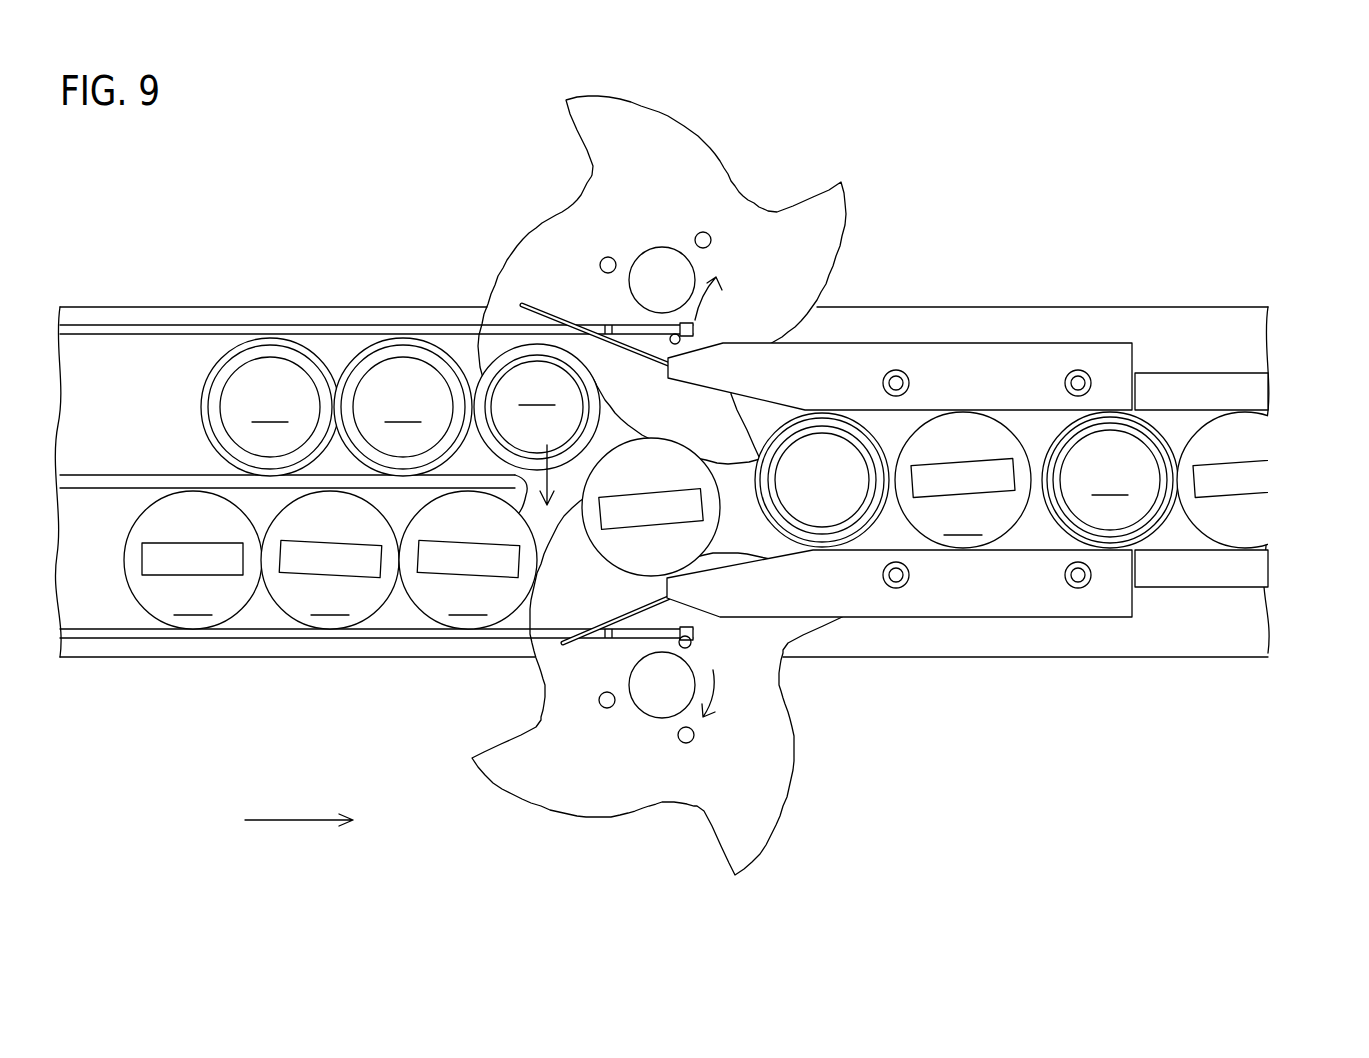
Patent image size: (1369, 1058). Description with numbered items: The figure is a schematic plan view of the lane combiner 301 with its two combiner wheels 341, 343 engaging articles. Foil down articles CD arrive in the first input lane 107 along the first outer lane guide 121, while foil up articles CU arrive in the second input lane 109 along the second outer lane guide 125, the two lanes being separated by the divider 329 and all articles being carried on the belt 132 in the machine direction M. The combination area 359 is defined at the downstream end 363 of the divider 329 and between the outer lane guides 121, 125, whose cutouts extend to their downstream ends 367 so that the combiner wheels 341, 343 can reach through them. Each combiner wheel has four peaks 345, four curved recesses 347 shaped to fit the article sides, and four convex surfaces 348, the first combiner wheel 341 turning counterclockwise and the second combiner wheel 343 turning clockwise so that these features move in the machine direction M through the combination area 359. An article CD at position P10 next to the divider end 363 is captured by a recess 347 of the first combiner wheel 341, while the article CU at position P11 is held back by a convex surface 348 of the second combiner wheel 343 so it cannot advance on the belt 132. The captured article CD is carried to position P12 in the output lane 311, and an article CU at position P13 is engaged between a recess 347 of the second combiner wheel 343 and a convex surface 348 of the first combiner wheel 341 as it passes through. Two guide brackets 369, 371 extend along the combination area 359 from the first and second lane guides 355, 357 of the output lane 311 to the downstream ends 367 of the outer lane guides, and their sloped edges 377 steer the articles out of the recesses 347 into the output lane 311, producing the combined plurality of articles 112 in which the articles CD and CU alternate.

The lane combiner 301 is at (960, 69).
The first combiner wheel 341 is at (713, 121).
The second combiner wheel 343 is at (804, 801).
The peaks 345 is at (841, 182).
The recesses 347 is at (778, 212).
The convex surfaces 348 is at (508, 255).
The downstream ends of the outer lane guides 367 is at (695, 328).
The first guide bracket 369 is at (1037, 360).
The second guide bracket 371 is at (1025, 600).
The sloped edge 377 is at (713, 385).
The first lane guide 355 is at (1248, 390).
The second lane guide 357 is at (1248, 565).
The combination area 359 is at (547, 458).
The downstream end of the divider 363 is at (522, 513).
The first input lane 107 is at (259, 298).
The second input lane 109 is at (259, 664).
The first outer lane guide 121 is at (328, 325).
The second outer lane guide 125 is at (332, 640).
The divider 329 is at (165, 490).
The belt 132 is at (1150, 320).
The combined plurality of articles 112 is at (1171, 406).
The output lane 311 is at (1213, 606).
The position P10 is at (557, 375).
The position P11 is at (440, 598).
The position P12 is at (830, 450).
The position P13 is at (683, 470).
The machine direction M is at (298, 817).
The foil down articles CD is at (827, 508).
The foil up articles CU is at (1248, 450).